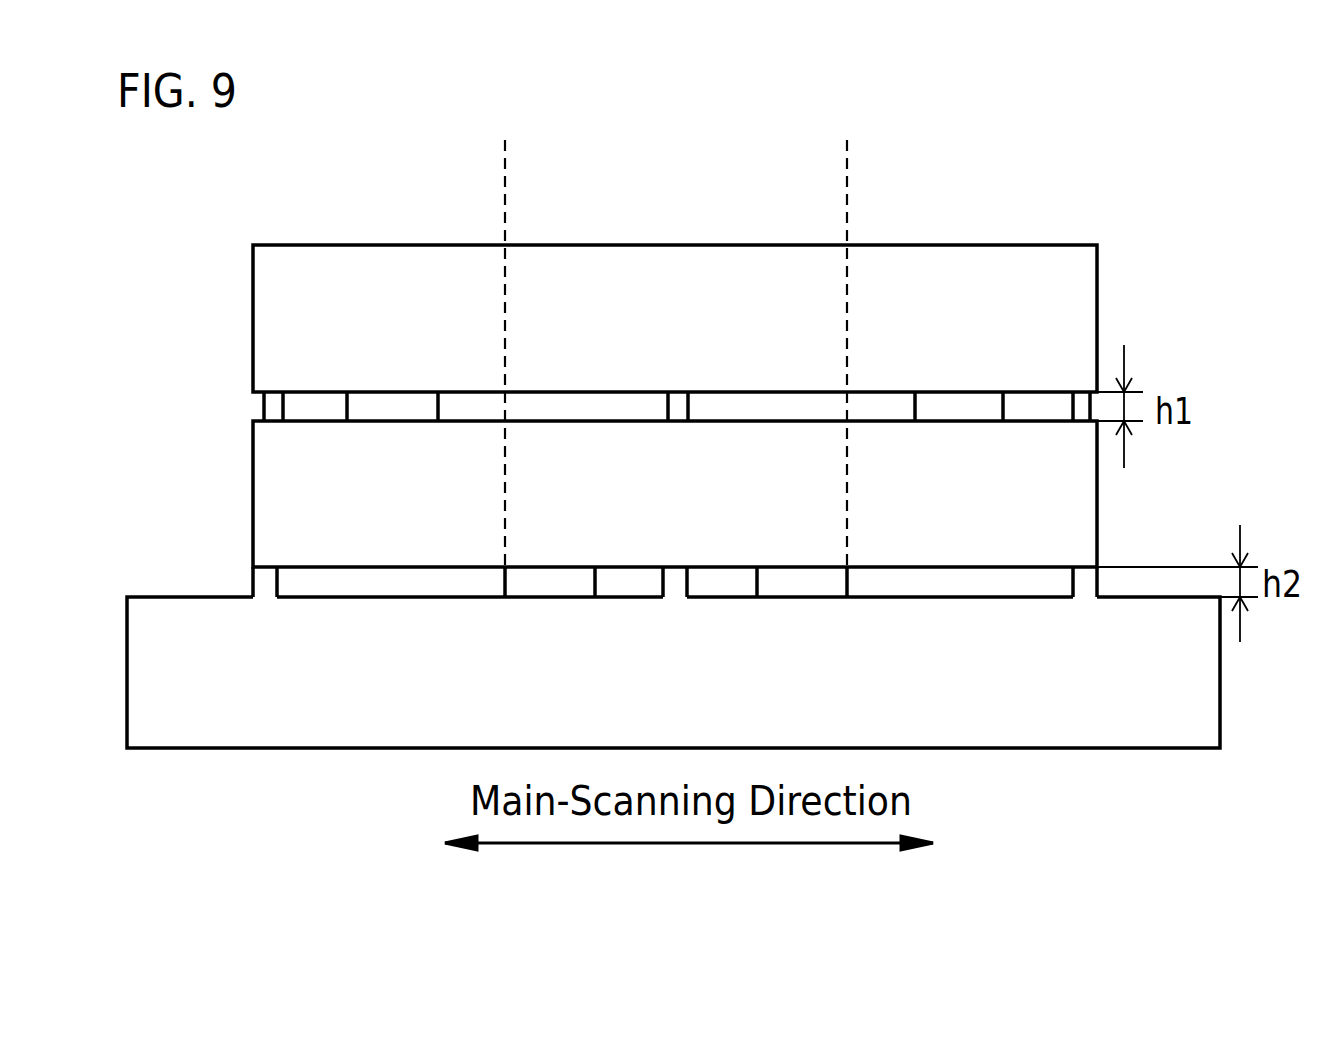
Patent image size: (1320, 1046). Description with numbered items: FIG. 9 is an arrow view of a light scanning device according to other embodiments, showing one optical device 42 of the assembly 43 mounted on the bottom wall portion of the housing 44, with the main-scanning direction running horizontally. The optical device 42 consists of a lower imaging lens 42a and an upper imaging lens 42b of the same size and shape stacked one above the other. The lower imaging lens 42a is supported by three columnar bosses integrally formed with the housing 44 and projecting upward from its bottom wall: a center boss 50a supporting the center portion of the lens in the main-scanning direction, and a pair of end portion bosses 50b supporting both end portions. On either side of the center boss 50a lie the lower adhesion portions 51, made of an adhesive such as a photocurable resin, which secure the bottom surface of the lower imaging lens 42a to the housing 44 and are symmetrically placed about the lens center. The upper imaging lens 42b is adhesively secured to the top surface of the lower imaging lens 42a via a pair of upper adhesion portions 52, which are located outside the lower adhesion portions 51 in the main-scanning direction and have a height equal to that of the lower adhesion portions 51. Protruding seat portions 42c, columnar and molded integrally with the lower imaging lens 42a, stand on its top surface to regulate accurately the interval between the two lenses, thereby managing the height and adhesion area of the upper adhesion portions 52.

The recording head 43 is at (313, 201).
The optical device 42 is at (1010, 236).
The lower imaging lens 42a is at (1097, 530).
The upper imaging lens 42b is at (1097, 282).
The protruding seat portion 42c is at (273, 403).
The housing 44 is at (187, 594).
The center boss 50a is at (672, 578).
The end portion boss 50b is at (266, 580).
The lower adhesion portion 51 is at (548, 580).
The upper adhesion portion 52 is at (403, 403).